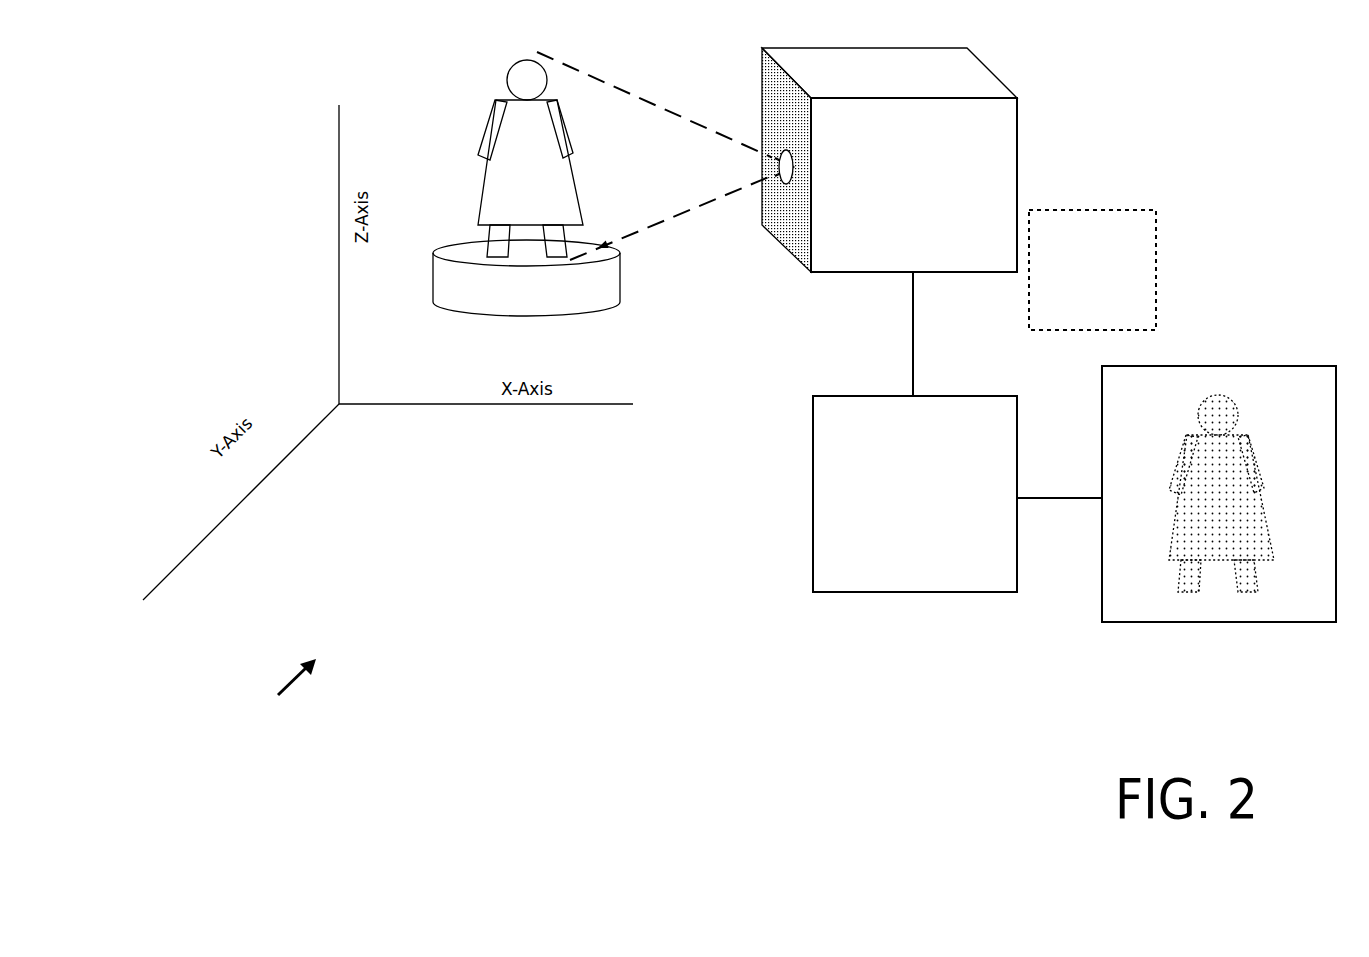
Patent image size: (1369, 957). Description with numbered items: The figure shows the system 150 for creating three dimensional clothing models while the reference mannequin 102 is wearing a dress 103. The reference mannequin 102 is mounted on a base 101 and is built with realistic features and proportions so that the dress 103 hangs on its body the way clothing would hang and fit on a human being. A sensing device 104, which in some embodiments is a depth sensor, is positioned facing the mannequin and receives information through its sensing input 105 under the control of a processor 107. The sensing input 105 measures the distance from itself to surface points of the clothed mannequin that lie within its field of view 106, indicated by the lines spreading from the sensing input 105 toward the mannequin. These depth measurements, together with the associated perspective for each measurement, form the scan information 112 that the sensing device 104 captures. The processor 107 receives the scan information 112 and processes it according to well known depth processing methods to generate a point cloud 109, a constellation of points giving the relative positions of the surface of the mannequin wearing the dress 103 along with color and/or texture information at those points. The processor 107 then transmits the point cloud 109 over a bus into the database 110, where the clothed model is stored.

The base 101 is at (490, 287).
The reference mannequin 102 is at (497, 158).
The dress 103 is at (512, 199).
The sensing device 104 is at (981, 176).
The sensing input 105 is at (783, 186).
The field of view 106 is at (692, 121).
The processor 107 is at (868, 492).
The point cloud 109 is at (1193, 436).
The database 110 is at (1180, 622).
The scan information 112 is at (1072, 254).
The system 150 is at (278, 690).